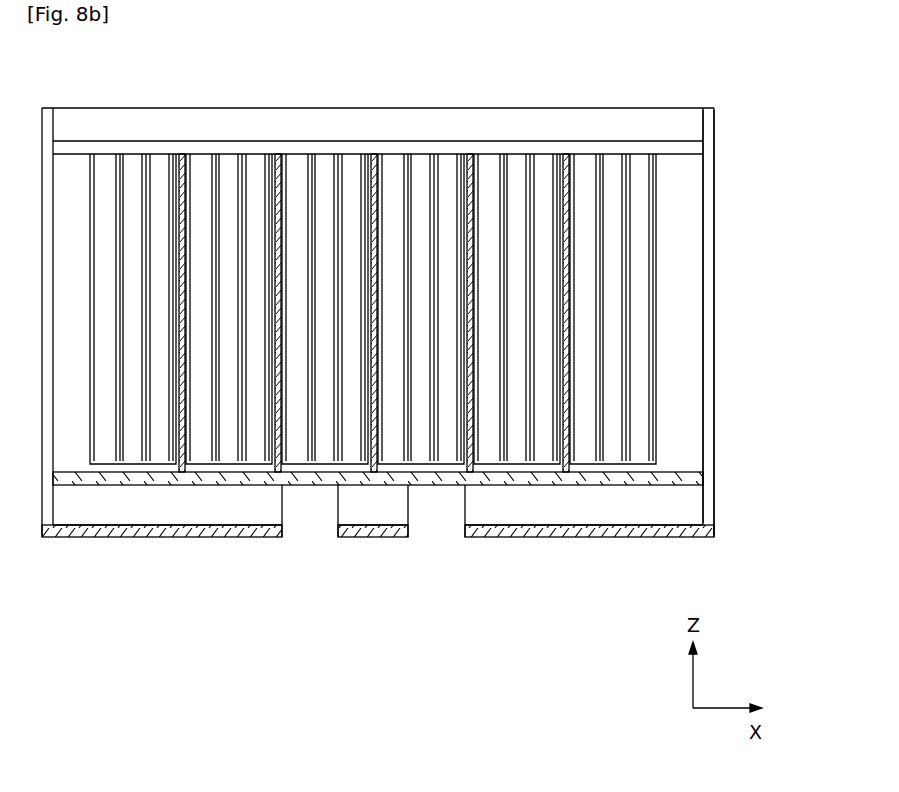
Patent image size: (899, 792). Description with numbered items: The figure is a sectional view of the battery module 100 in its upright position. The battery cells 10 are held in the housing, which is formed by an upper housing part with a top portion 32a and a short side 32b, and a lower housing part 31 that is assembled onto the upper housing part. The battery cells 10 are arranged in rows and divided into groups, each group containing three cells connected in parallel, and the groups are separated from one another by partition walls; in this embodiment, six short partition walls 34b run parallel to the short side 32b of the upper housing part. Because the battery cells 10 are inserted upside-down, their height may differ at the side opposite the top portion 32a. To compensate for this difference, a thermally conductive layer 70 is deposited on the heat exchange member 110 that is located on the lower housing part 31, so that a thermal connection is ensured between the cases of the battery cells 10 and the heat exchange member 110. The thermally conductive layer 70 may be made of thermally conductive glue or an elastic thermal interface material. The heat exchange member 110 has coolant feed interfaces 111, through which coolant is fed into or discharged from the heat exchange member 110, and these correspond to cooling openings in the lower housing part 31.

The battery module 100 is at (75, 73).
The battery cells 10 is at (640, 236).
The lower housing part 31 is at (660, 530).
The top portion 32a is at (577, 108).
The short side 32b is at (716, 276).
The short partition walls 34b is at (183, 210).
The thermally conductive layer 70 is at (680, 477).
The heat exchange member 110 is at (680, 507).
The coolant feed interfaces 111 is at (312, 505).